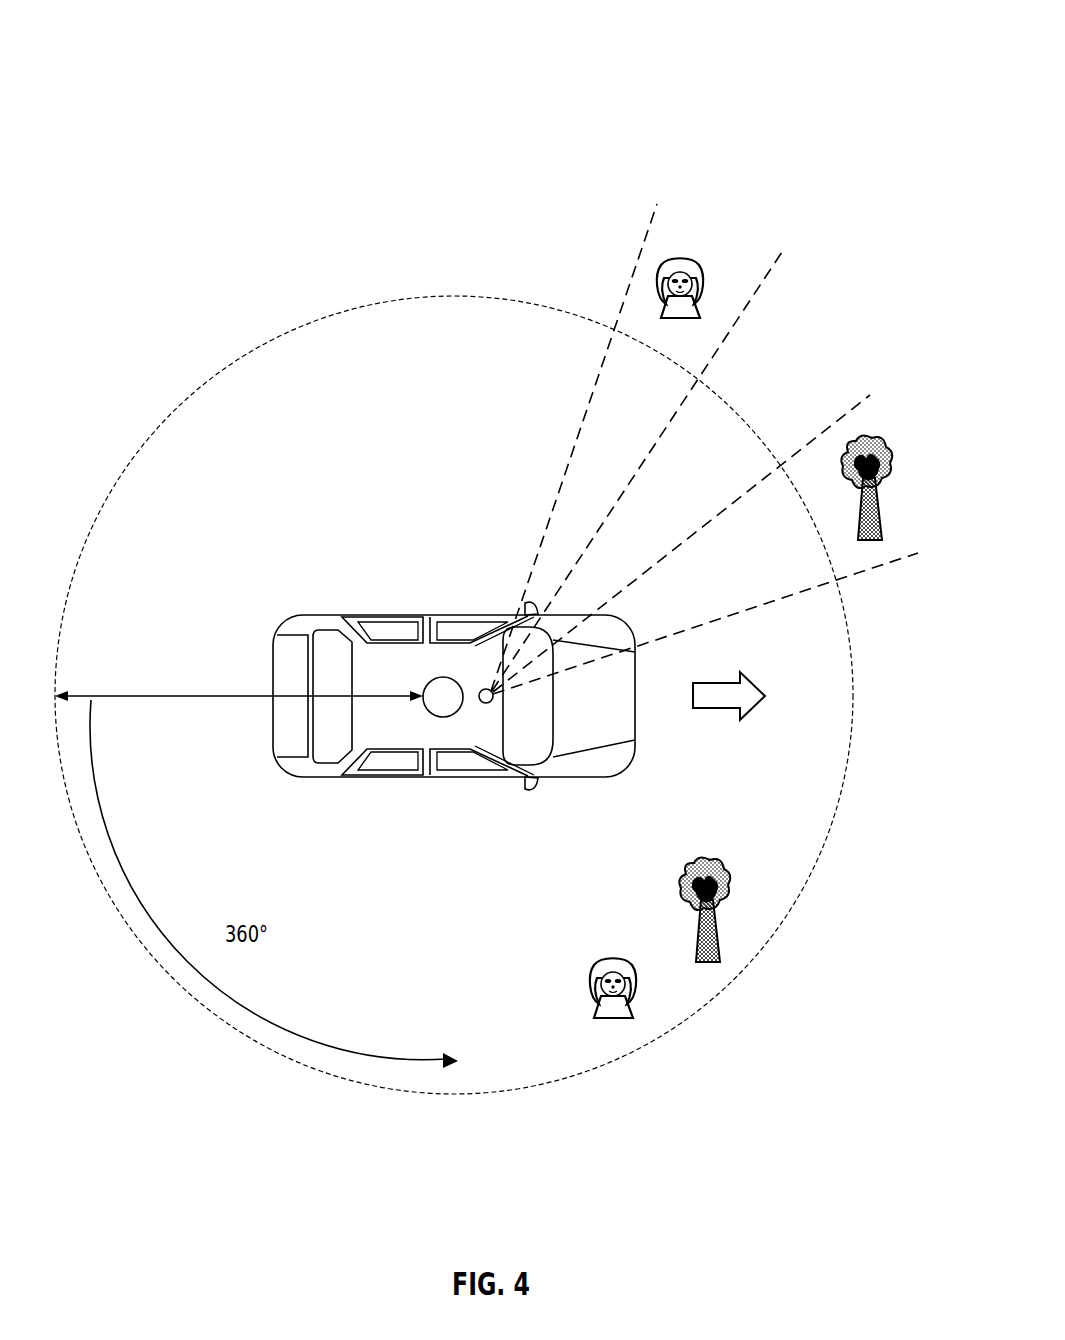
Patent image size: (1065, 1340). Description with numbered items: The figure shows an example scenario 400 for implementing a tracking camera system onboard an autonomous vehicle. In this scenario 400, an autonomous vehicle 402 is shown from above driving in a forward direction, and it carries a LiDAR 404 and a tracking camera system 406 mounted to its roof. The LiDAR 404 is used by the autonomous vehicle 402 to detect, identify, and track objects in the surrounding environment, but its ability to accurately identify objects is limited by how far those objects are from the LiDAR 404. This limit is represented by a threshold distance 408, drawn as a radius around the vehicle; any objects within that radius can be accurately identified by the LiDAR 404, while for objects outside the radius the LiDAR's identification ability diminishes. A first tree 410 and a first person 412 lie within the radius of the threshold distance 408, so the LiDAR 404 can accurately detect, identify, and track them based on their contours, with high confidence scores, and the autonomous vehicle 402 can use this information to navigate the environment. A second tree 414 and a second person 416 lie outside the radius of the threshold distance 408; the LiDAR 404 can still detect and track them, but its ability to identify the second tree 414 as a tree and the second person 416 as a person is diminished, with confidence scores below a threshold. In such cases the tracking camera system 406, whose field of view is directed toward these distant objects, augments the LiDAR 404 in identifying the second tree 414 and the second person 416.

The example scenario 400 is at (90, 54).
The autonomous vehicle 402 is at (288, 626).
The LiDAR 404 is at (443, 717).
The tracking camera system 406 is at (485, 689).
The threshold distance 408 is at (219, 700).
The first tree 410 is at (706, 965).
The first person 412 is at (618, 1020).
The second tree 414 is at (880, 442).
The second person 416 is at (690, 257).